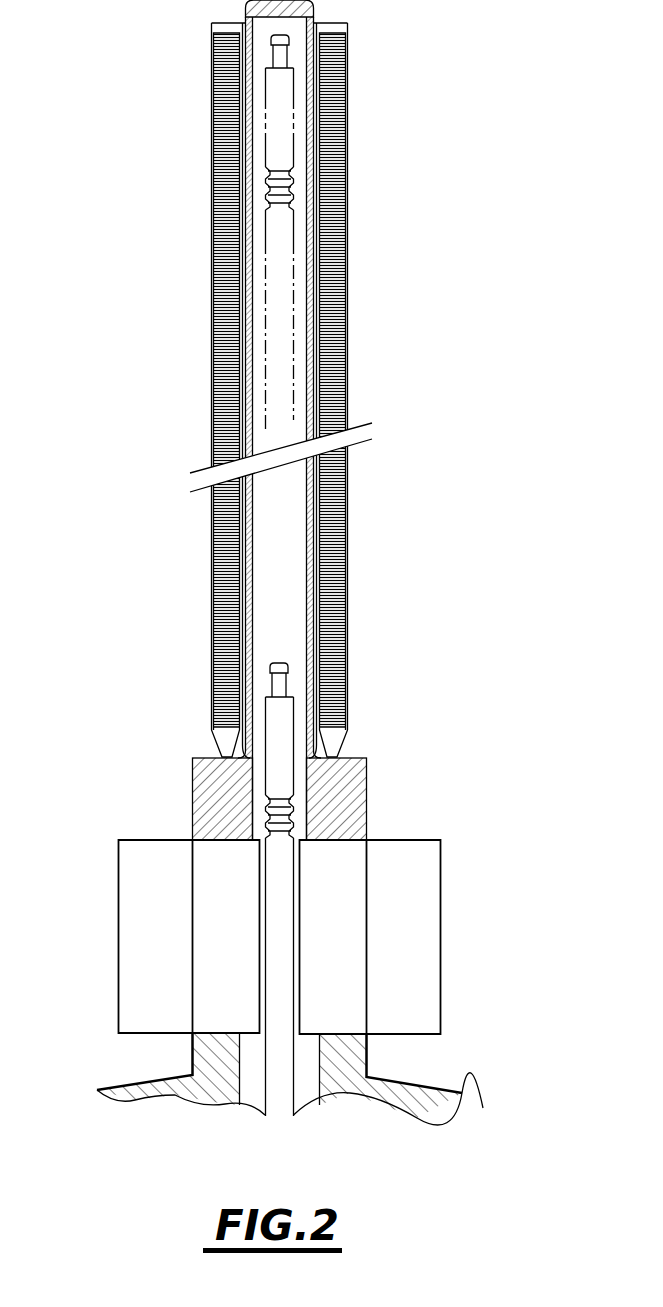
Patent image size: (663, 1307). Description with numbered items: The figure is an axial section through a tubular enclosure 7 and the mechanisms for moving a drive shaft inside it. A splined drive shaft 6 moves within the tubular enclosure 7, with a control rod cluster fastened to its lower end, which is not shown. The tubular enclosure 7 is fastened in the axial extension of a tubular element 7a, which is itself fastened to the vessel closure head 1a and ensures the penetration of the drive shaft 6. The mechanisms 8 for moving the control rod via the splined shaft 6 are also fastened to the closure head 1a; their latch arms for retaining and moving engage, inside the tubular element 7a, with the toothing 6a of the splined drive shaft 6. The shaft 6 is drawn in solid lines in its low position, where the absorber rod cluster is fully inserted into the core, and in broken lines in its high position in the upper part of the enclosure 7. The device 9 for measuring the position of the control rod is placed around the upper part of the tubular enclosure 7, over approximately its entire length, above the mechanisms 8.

The vessel closure head 1a is at (483, 1108).
The splined drive shaft 6 is at (280, 143).
The toothing 6a is at (265, 826).
The tubular enclosure 7 is at (317, 287).
The tubular element 7a is at (332, 808).
The mechanisms for moving the control rod 8 is at (140, 953).
The device for measuring the position of the control rod 9 is at (220, 253).